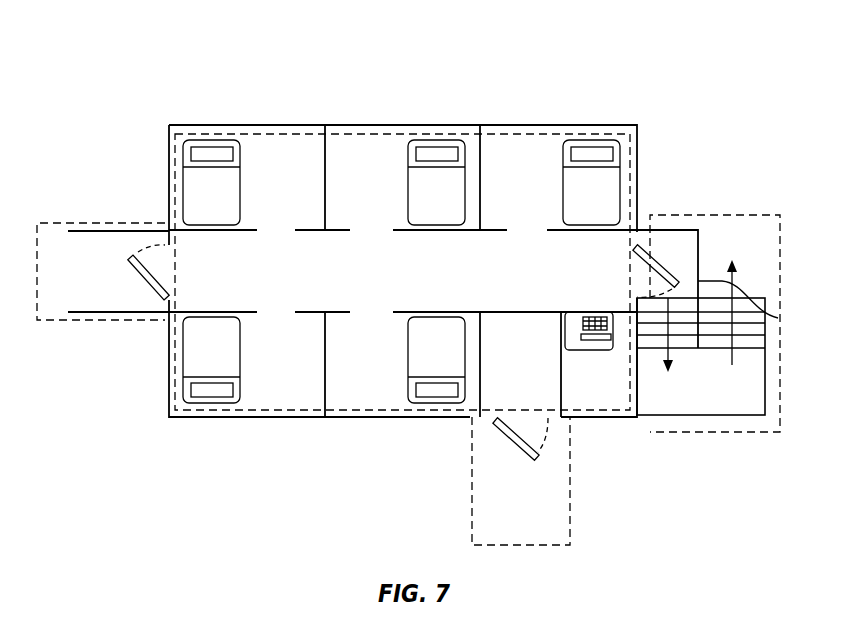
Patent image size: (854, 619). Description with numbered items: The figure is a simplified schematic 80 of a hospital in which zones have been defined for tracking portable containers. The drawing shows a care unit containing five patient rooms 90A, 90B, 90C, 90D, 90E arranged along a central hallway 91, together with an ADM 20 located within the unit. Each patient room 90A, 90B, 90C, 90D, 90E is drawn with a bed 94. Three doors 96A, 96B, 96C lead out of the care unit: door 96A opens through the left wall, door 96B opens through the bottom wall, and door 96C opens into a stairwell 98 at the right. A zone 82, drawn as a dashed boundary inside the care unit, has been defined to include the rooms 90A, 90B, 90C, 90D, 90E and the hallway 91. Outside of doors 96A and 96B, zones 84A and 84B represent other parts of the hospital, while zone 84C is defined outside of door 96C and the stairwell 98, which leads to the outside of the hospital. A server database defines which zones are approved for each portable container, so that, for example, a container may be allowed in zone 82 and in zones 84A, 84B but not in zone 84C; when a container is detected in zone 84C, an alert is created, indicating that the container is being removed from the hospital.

The simplified schematic 80 is at (164, 42).
The zone 82 is at (352, 133).
The zone 84A is at (103, 220).
The zone 84B is at (570, 495).
The zone 84C is at (715, 432).
The patient room 90A is at (293, 163).
The patient room 90B is at (373, 163).
The patient room 90C is at (544, 163).
The patient room 90D is at (271, 373).
The patient room 90E is at (398, 406).
The hallway 91 is at (532, 287).
The bed 94 is at (455, 362).
The door 96A is at (140, 278).
The door 96B is at (515, 445).
The door 96C is at (660, 262).
The ADM 20 is at (575, 350).
The stairwell 98 is at (740, 383).